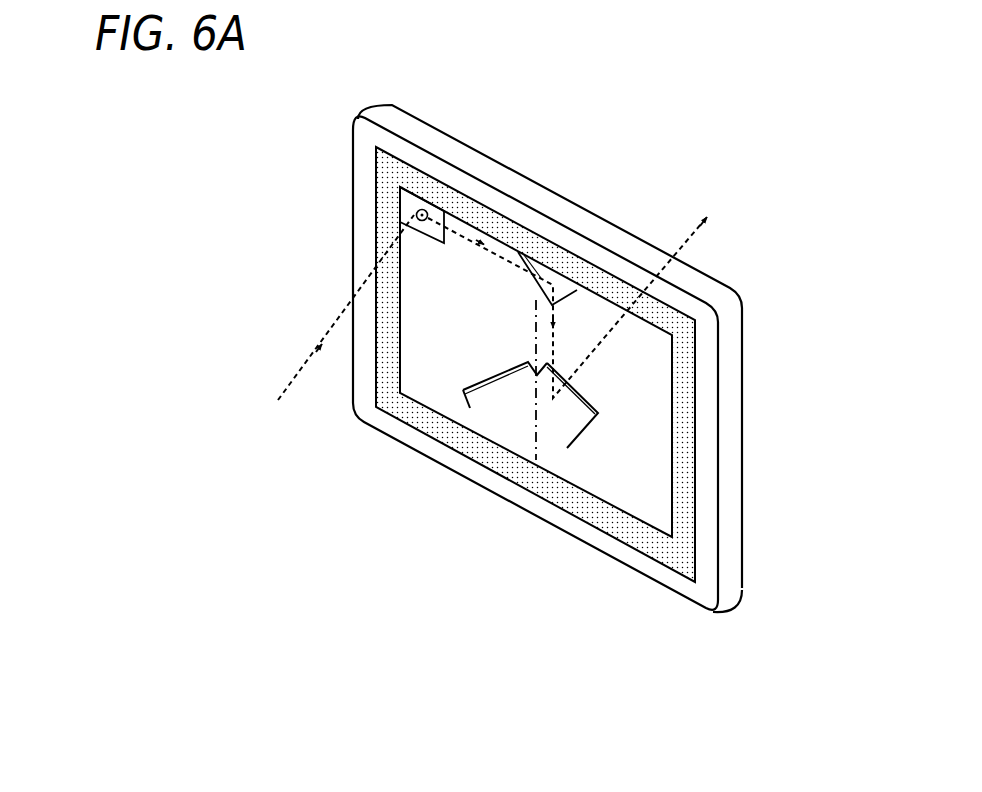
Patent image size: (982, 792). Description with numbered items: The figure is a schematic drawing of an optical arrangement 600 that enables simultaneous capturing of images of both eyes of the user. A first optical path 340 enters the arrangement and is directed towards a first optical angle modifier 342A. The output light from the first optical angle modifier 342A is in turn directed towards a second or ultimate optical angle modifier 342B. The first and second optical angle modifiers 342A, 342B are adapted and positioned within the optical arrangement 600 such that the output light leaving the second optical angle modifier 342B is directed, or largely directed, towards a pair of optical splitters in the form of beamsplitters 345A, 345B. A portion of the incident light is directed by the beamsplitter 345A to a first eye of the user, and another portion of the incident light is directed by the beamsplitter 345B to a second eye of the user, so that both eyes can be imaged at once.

The optical arrangement 600 is at (842, 112).
The first optical path 340 is at (272, 407).
The first optical angle modifier 342A is at (400, 189).
The second optical angle modifier 342B is at (567, 285).
The beamsplitter 345A is at (507, 400).
The beamsplitter 345B is at (567, 410).